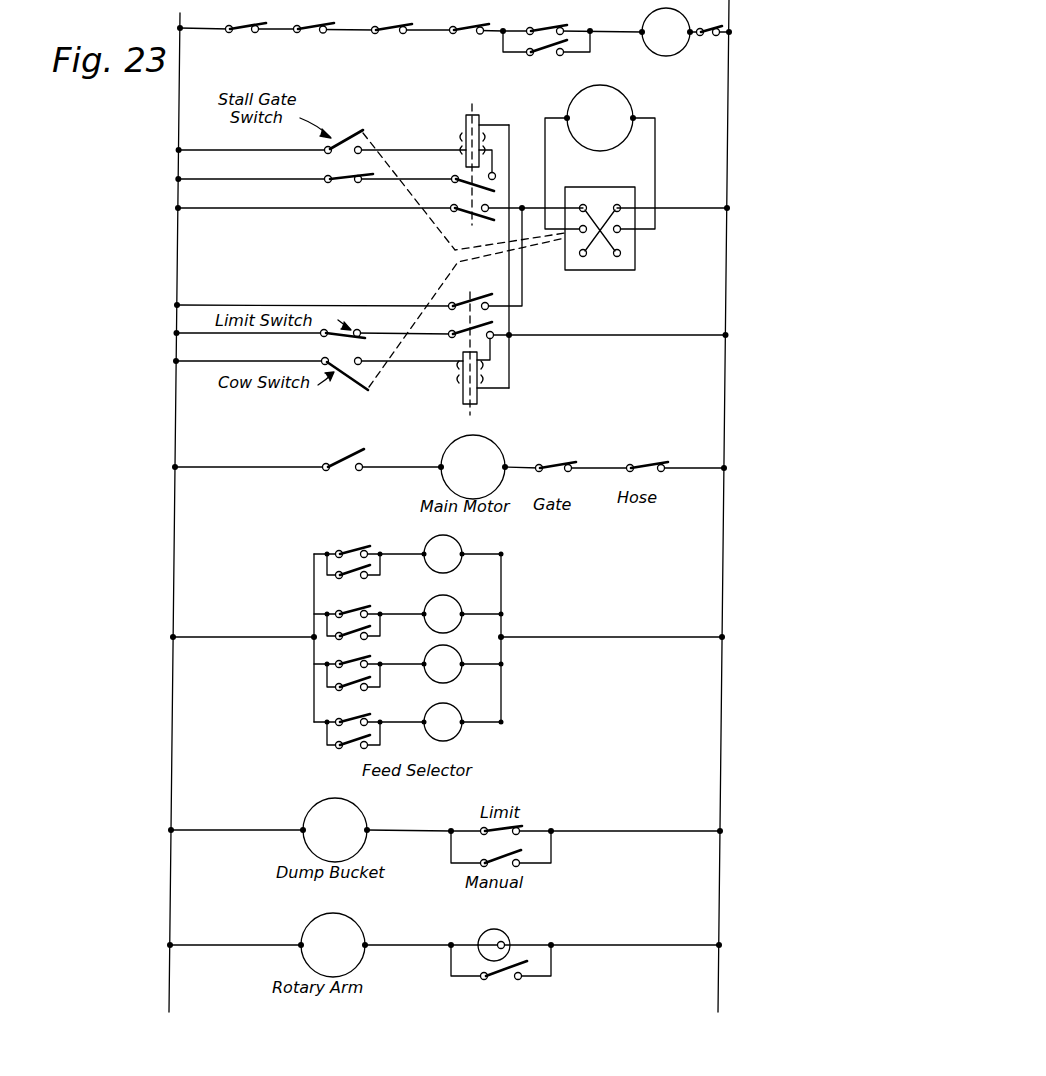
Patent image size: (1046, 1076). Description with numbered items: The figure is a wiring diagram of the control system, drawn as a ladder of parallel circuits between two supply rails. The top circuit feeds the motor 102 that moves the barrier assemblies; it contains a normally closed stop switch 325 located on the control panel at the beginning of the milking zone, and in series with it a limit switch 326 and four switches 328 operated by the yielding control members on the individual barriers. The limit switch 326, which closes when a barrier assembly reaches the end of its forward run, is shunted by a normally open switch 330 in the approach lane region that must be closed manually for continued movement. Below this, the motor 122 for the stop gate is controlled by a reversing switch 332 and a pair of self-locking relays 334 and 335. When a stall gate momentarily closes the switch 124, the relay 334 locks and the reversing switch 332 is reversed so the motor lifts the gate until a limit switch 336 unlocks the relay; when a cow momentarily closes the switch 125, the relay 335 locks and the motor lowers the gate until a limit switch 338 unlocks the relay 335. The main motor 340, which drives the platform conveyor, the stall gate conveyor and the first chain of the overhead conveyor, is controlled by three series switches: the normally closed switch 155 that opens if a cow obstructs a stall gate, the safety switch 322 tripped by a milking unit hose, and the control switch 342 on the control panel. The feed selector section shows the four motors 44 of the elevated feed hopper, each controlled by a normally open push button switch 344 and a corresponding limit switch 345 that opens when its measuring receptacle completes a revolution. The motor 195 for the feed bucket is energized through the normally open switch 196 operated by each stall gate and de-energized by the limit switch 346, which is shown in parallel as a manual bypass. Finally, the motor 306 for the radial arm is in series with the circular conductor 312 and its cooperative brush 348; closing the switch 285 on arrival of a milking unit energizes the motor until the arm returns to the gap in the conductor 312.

The switches 328 is at (289, 55).
The limit switch 326 is at (531, 22).
The normally open switch 330 is at (548, 55).
The motor 102 is at (673, 54).
The stop switch 325 is at (708, 37).
The motor 122 is at (632, 106).
The reversing switch 332 is at (606, 271).
The switch 124 is at (352, 130).
The limit switch 336 is at (350, 181).
The self-locking relay 334 is at (460, 125).
The limit switch 338 is at (368, 316).
The switch 125 is at (344, 390).
The self-locking relay 335 is at (462, 380).
The control switch 342 is at (342, 462).
The main motor 340 is at (492, 440).
The normally closed switch 155 is at (557, 465).
The safety switch 322 is at (650, 465).
The limit switches 345 is at (352, 548).
The push button switches 344 is at (352, 578).
The motors 44 is at (458, 570).
The motor 195 is at (360, 808).
The limit switch 346 is at (484, 827).
The normally open switch 196 is at (500, 856).
The motor 306 is at (360, 922).
The contact 348 is at (488, 938).
The circular conductor 312 is at (509, 931).
The switch 285 is at (497, 972).